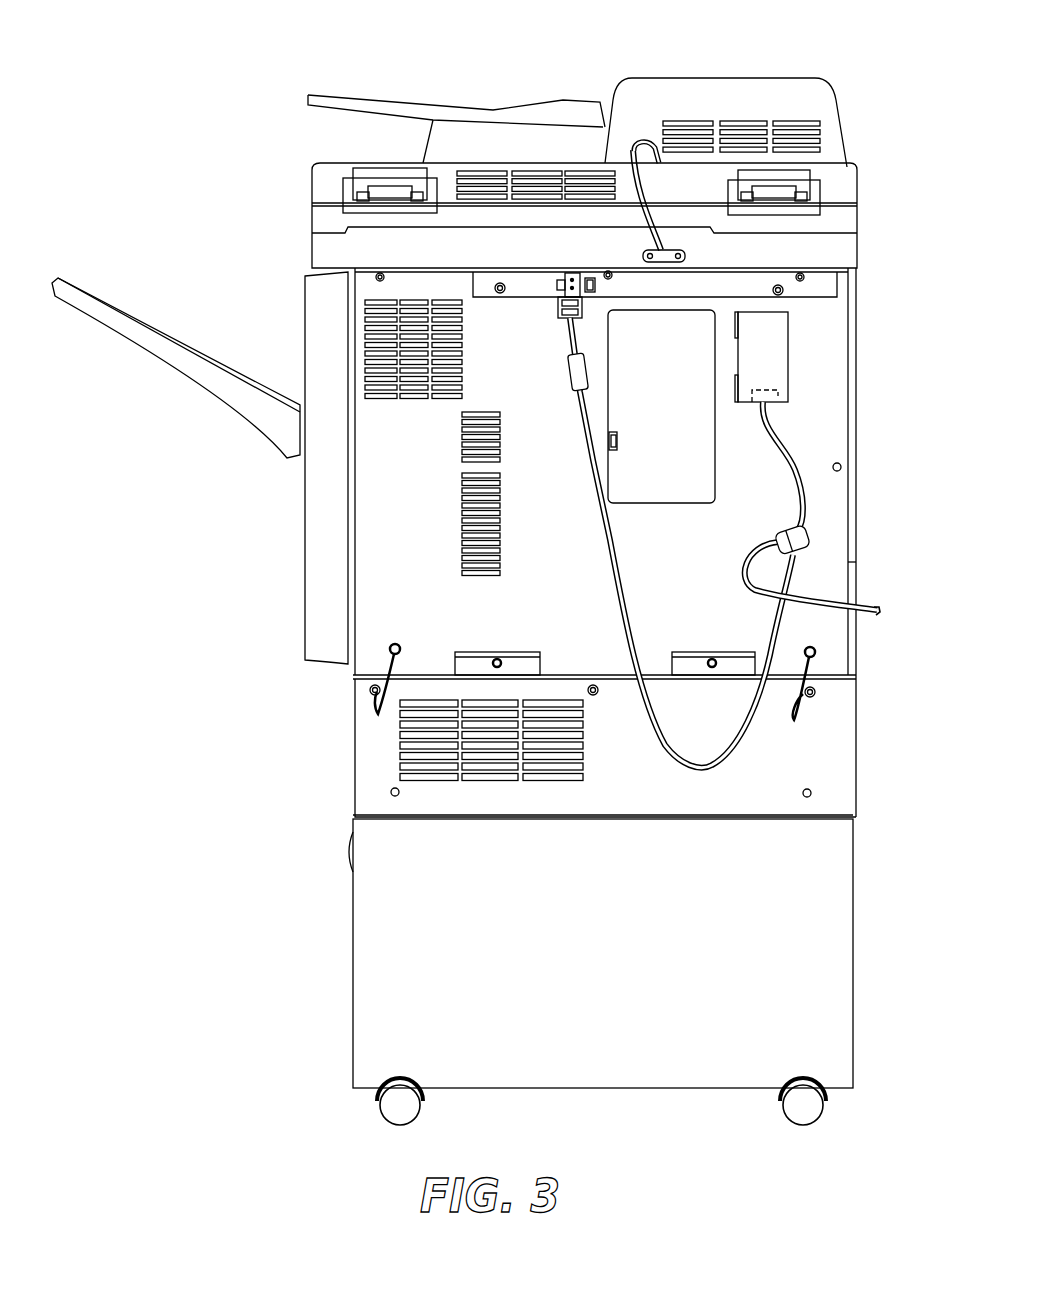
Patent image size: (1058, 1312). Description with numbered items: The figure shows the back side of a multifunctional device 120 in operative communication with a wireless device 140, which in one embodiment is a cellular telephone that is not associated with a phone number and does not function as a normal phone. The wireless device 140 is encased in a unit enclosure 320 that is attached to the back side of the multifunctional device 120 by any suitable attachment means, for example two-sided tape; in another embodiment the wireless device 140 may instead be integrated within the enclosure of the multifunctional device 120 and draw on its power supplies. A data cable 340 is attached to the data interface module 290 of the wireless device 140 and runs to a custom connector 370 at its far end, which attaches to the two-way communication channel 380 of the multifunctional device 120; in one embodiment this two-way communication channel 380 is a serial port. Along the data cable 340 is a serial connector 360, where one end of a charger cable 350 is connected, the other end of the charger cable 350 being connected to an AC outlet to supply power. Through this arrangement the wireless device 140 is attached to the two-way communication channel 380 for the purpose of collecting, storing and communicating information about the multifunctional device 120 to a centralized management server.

The multifunctional device 120 is at (375, 65).
The wireless device 140 is at (797, 318).
The unit enclosure 320 is at (787, 357).
The data interface module 290 is at (783, 393).
The data cable 340 is at (783, 450).
The serial connector 360 is at (805, 543).
The charger cable 350 is at (827, 600).
The custom connector 370 is at (563, 313).
The two-way communication channel 380 is at (570, 273).